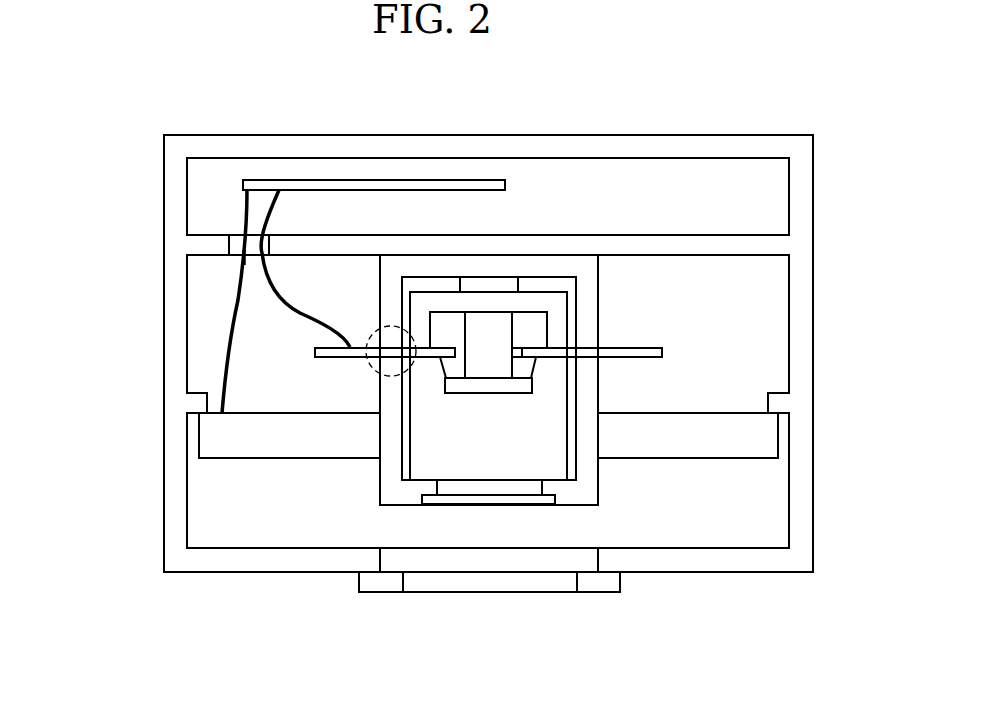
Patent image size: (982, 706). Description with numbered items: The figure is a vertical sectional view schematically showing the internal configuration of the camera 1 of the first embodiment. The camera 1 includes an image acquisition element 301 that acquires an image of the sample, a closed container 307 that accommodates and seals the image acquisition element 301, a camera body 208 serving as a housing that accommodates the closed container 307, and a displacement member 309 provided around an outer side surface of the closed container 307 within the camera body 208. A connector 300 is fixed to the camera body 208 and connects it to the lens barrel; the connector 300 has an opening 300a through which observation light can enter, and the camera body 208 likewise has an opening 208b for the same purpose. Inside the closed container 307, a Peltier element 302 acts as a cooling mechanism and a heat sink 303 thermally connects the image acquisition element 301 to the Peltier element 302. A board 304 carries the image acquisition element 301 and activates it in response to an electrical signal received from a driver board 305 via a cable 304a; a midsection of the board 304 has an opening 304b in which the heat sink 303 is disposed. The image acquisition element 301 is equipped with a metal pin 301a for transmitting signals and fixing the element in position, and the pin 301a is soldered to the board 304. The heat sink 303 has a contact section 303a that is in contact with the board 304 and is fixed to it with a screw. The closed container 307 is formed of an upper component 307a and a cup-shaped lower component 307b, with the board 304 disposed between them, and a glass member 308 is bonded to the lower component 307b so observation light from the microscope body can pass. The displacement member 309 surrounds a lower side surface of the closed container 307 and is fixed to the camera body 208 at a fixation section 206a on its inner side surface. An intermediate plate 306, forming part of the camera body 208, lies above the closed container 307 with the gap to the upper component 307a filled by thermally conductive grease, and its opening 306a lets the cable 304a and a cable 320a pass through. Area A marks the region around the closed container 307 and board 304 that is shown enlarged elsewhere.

The camera 1 is at (790, 108).
The camera body 208 is at (793, 573).
The opening 208b is at (412, 557).
The fixation section 206a is at (195, 402).
The connector 300 is at (600, 593).
The opening 300a is at (540, 578).
The image acquisition element 301 is at (467, 395).
The metal pin 301a is at (543, 372).
The Peltier element 302 is at (505, 283).
The heat sink 303 is at (557, 303).
The contact section 303a is at (558, 347).
The board 304 is at (662, 352).
The cable 304a is at (268, 280).
The opening 304b is at (522, 353).
The driver board 305 is at (322, 180).
The intermediate plate 306 is at (762, 234).
The opening 306a is at (242, 245).
The closed container 307 is at (82, 317).
The upper component 307a is at (378, 305).
The lower component 307b is at (378, 393).
The glass member 308 is at (450, 500).
The displacement member 309 is at (240, 458).
The cable 320a is at (238, 290).
The area A is at (392, 326).